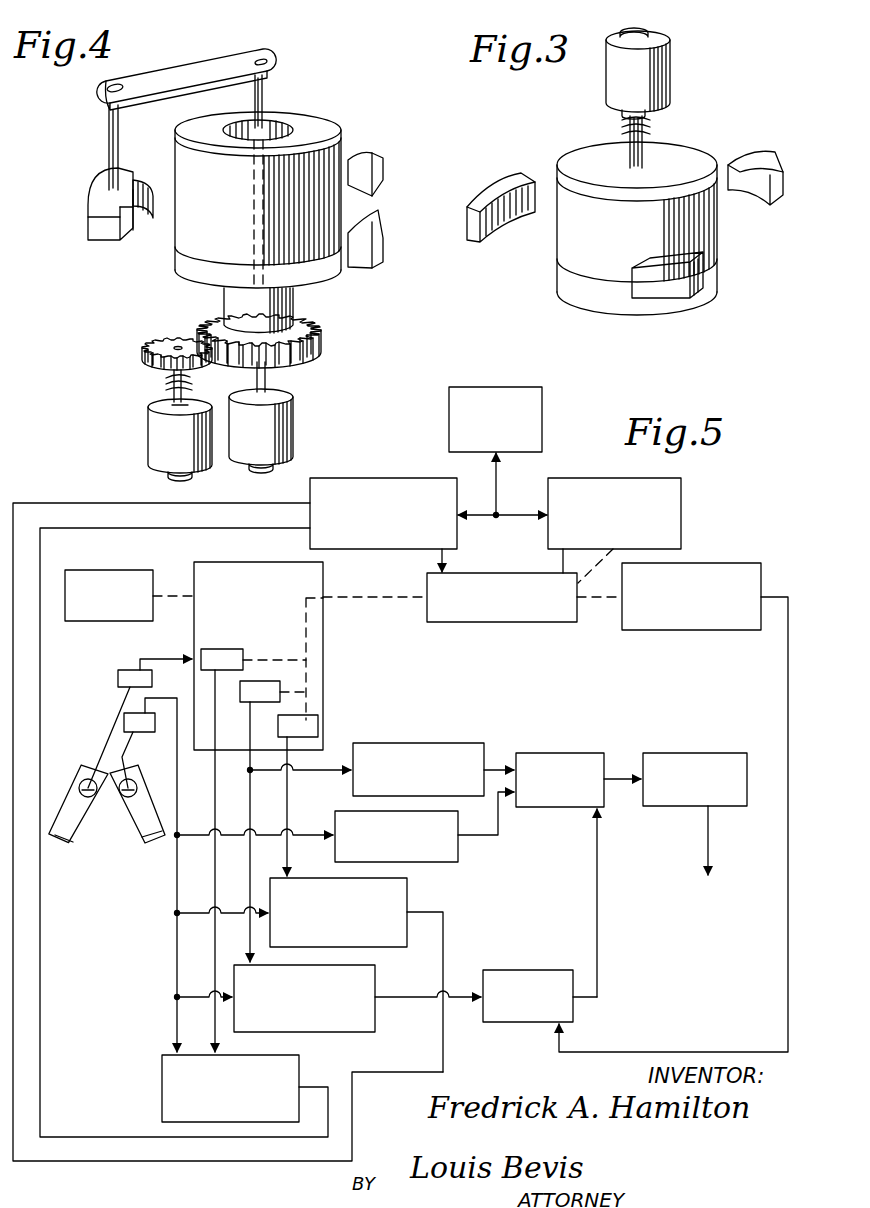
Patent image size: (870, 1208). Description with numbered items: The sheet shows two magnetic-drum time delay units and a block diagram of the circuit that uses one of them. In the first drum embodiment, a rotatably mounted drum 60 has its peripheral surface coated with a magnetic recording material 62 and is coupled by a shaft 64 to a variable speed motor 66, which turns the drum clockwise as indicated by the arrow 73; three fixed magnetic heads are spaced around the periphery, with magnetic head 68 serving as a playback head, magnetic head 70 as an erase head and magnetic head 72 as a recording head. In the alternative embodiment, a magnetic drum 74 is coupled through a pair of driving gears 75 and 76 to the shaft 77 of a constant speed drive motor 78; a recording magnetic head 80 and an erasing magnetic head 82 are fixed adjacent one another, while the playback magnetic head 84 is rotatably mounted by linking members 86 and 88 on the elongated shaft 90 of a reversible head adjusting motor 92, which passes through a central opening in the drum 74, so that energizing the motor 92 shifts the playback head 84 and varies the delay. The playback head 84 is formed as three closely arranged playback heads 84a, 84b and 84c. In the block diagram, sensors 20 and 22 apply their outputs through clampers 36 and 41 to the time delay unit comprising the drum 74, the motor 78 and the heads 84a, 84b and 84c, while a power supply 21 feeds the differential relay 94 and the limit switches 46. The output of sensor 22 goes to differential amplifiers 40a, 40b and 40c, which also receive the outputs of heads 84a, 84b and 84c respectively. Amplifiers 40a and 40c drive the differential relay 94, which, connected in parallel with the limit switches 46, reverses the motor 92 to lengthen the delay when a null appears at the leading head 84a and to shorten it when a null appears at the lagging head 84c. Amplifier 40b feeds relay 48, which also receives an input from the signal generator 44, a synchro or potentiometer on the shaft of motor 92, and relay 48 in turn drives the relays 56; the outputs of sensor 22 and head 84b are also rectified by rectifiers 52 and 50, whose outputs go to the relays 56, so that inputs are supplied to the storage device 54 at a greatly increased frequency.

In FIG. 5, the sensor 20 is at (66, 790).
In FIG. 5, the power supply 21 is at (543, 413).
In FIG. 5, the sensor 22 is at (152, 790).
In FIG. 5, the clamper 36 is at (125, 670).
In FIG. 5, the differential amplifier 40a is at (407, 894).
In FIG. 5, the differential amplifier 40b is at (362, 1032).
In FIG. 5, the differential amplifier 40c is at (162, 1087).
In FIG. 5, the clamper 41 is at (130, 720).
In FIG. 5, the signal generator 44 is at (684, 631).
In FIG. 5, the limit switches 46 is at (682, 505).
In FIG. 5, the relay 48 is at (510, 1023).
In FIG. 5, the rectifier 50 is at (437, 743).
In FIG. 5, the rectifier 52 is at (458, 852).
In FIG. 5, the storage device 54 is at (707, 753).
In FIG. 5, the relays 56 is at (568, 753).
In FIG. 3, the drum 60 is at (692, 146).
In FIG. 3, the magnetic recording material 62 is at (710, 229).
In FIG. 3, the shaft 64 is at (660, 150).
In FIG. 3, the variable speed motor 66 is at (662, 73).
In FIG. 3, the magnetic head 68 is at (754, 158).
In FIG. 3, the magnetic head 70 is at (679, 285).
In FIG. 3, the magnetic head 72 is at (496, 180).
In FIG. 3, the arrow 73 is at (622, 135).
In FIG. 4, the magnetic drum 74 is at (330, 128).
In FIG. 5, the magnetic drum 74 is at (324, 632).
In FIG. 4, the driving gear 75 is at (322, 346).
In FIG. 4, the driving gear 76 is at (142, 353).
In FIG. 4, the shaft 77 is at (166, 378).
In FIG. 4, the constant speed drive motor 78 is at (158, 431).
In FIG. 5, the constant speed drive motor 78 is at (107, 570).
In FIG. 4, the recording magnetic head 80 is at (371, 255).
In FIG. 4, the erasing magnetic head 82 is at (371, 165).
In FIG. 4, the playback magnetic head 84 is at (94, 194).
In FIG. 4, the playback head 84a is at (104, 235).
In FIG. 5, the playback head 84a is at (312, 726).
In FIG. 4, the playback head 84b is at (130, 222).
In FIG. 5, the playback head 84b is at (275, 690).
In FIG. 4, the playback head 84c is at (150, 218).
In FIG. 5, the playback head 84c is at (238, 657).
In FIG. 4, the linking member 86 is at (108, 133).
In FIG. 4, the linking member 88 is at (188, 70).
In FIG. 4, the shaft 90 is at (265, 97).
In FIG. 4, the magnetic head adjusting motor 92 is at (294, 422).
In FIG. 5, the magnetic head adjusting motor 92 is at (505, 624).
In FIG. 5, the differential relay 94 is at (368, 480).